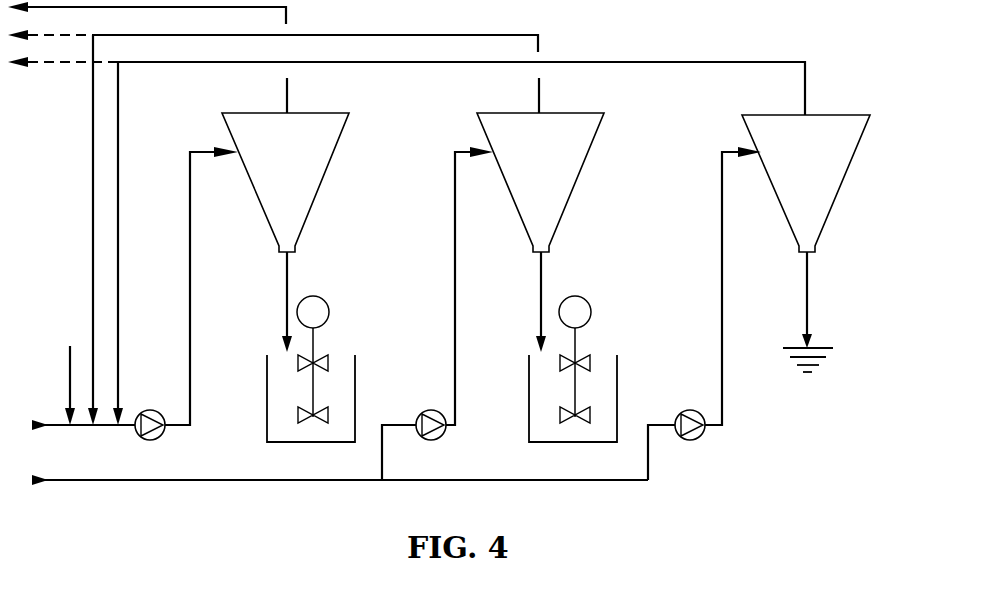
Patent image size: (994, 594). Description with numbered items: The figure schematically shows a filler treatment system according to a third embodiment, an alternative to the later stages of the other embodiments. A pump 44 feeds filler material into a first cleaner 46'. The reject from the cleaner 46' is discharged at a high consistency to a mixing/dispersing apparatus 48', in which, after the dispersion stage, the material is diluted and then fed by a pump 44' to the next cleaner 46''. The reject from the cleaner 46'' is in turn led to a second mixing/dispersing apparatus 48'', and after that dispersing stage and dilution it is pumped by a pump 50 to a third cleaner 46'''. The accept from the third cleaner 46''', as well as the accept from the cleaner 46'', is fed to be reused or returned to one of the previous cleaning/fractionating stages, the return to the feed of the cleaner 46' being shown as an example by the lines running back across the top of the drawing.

The pump 44 is at (183, 441).
The pump 44' is at (458, 441).
The cleaner 46' is at (315, 182).
The cleaner 46'' is at (580, 182).
The third cleaner 46''' is at (812, 147).
The mixing/dispersing apparatus 48' is at (341, 365).
The second mixing/dispersing apparatus 48'' is at (598, 364).
The pump 50 is at (702, 437).